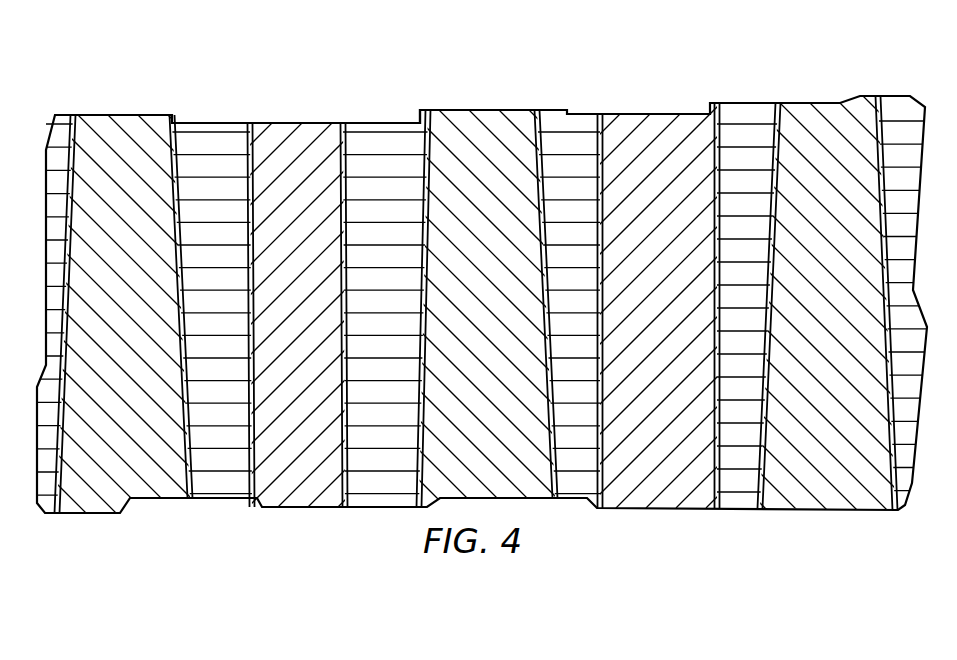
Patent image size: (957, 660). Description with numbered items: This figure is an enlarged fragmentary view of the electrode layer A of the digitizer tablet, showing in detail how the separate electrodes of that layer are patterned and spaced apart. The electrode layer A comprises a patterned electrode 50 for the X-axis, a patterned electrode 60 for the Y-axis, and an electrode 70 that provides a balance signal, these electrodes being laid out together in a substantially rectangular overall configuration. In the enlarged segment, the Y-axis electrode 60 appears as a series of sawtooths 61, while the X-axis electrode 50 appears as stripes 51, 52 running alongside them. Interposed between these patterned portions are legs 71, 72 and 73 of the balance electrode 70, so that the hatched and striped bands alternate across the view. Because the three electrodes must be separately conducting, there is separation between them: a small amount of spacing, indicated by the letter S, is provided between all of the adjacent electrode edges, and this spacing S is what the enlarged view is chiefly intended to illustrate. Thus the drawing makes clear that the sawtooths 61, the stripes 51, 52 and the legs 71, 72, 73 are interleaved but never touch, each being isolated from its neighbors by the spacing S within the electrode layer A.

The electrode layer A is at (851, 76).
The spacing S is at (73, 114).
The patterned electrode for the X-axis 50 is at (289, 116).
The stripe 51 is at (330, 130).
The stripe 52 is at (677, 128).
The patterned electrode for the Y-axis 60 is at (492, 104).
The sawtooth 61 is at (130, 125).
The balance electrode 70 is at (763, 98).
The leg 71 is at (213, 137).
The leg 72 is at (400, 135).
The leg 73 is at (585, 127).